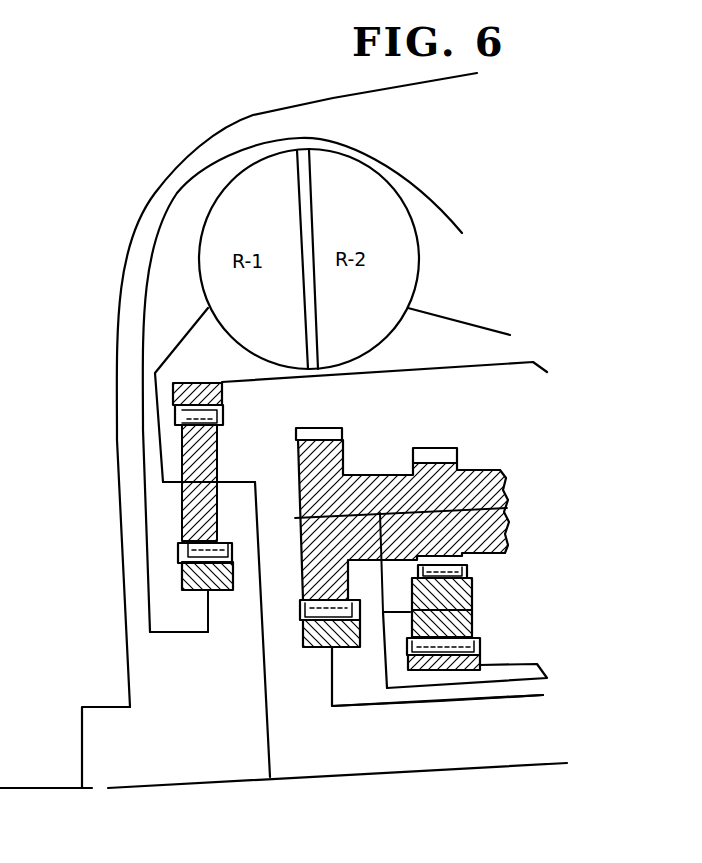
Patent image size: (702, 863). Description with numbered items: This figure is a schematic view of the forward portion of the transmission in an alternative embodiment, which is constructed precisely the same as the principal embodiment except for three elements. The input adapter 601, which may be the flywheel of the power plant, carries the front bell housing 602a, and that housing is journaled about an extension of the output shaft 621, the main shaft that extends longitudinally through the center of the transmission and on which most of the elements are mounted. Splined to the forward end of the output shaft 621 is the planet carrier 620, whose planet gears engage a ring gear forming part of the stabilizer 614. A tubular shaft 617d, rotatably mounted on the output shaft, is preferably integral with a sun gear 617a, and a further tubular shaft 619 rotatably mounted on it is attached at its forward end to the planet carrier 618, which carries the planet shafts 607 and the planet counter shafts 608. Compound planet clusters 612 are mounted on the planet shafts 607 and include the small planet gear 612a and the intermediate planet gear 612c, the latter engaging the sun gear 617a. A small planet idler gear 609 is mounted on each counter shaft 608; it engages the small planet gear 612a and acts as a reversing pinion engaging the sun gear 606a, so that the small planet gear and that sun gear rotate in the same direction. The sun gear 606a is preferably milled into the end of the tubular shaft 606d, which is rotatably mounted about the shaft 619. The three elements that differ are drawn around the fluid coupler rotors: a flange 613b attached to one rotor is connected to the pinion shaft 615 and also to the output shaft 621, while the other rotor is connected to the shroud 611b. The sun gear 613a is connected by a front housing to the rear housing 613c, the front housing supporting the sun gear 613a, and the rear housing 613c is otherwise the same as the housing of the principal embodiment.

The input adapter 601 is at (95, 706).
The front bell housing 602a is at (117, 452).
The sun gear 606a is at (487, 652).
The tubular shaft 606d is at (548, 674).
The planet shafts 607 is at (306, 513).
The planet counter shafts 608 is at (475, 608).
The small planet idler gear 609 is at (472, 583).
The shroud 611b is at (462, 318).
The compound planet clusters 612 is at (393, 462).
The small planet gear 612a is at (440, 448).
The intermediate planet gear 612c is at (330, 428).
The sun gear 613a is at (355, 95).
The flange 613b is at (186, 296).
The rear housing 613c is at (459, 129).
The stabilizer 614 is at (462, 362).
The pinion shaft 615 is at (232, 480).
The sun gear 617a is at (305, 648).
The tubular shaft 617d is at (428, 705).
The planet carrier 618 is at (385, 683).
The tubular shaft 619 is at (512, 700).
The planet carrier 620 is at (263, 682).
The output shaft 621 is at (338, 775).